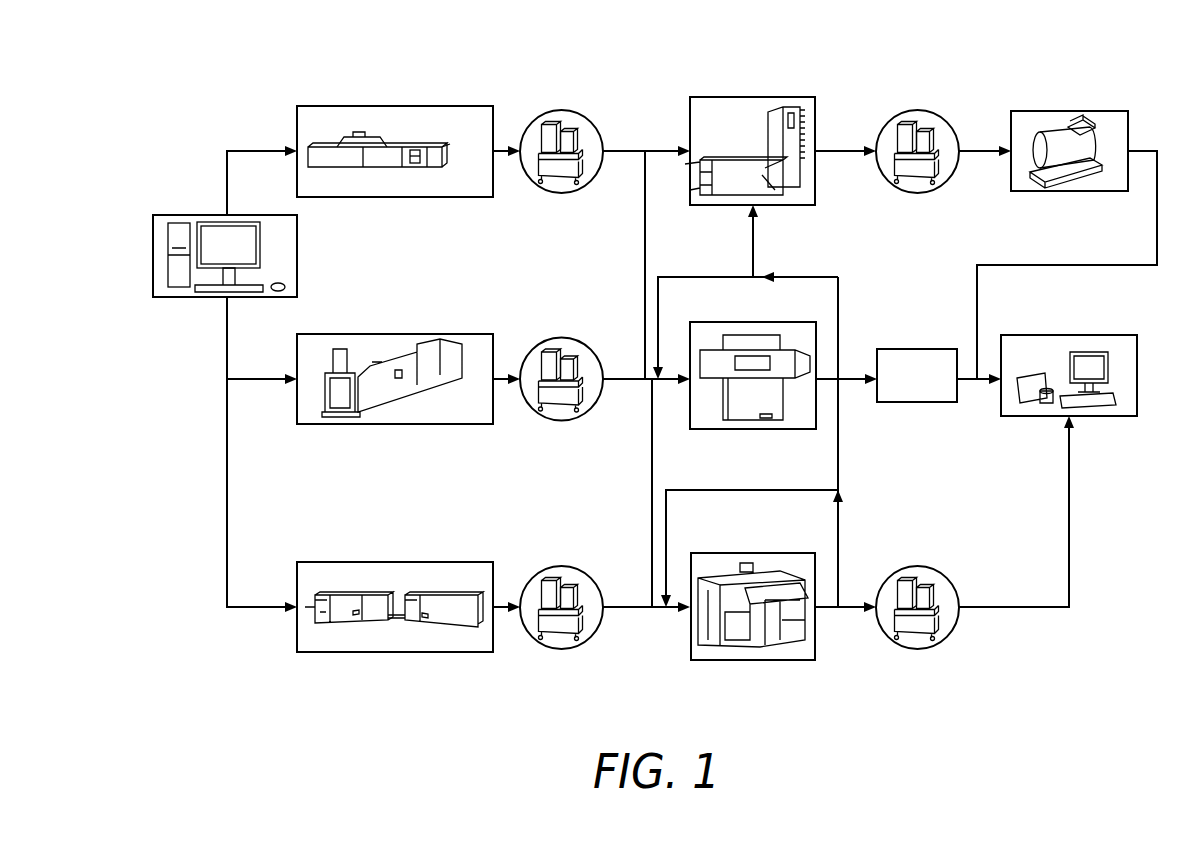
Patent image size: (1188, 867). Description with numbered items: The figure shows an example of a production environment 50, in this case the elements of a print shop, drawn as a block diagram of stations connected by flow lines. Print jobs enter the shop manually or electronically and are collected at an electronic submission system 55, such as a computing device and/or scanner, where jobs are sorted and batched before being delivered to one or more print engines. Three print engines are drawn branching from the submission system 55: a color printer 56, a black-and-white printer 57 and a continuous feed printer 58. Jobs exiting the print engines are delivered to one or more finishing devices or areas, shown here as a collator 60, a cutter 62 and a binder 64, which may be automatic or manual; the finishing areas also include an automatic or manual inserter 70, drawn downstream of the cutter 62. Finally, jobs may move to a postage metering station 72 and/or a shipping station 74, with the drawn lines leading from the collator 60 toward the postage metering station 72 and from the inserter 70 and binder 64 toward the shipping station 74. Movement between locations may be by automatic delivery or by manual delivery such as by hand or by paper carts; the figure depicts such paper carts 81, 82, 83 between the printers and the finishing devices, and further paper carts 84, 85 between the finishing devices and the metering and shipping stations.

The production environment 50 is at (250, 97).
The electronic submission system 55 is at (181, 297).
The color printer 56 is at (412, 197).
The black-and-white printer 57 is at (412, 424).
The continuous feed printer 58 is at (412, 652).
The collator 60 is at (763, 205).
The cutter 62 is at (763, 429).
The binder 64 is at (763, 660).
The inserter 70 is at (915, 402).
The postage metering station 72 is at (1065, 191).
The shipping station 74 is at (1095, 416).
The paper cart 81 is at (562, 193).
The paper cart 82 is at (562, 421).
The paper cart 83 is at (562, 649).
The paper cart 84 is at (916, 193).
The paper cart 85 is at (916, 649).